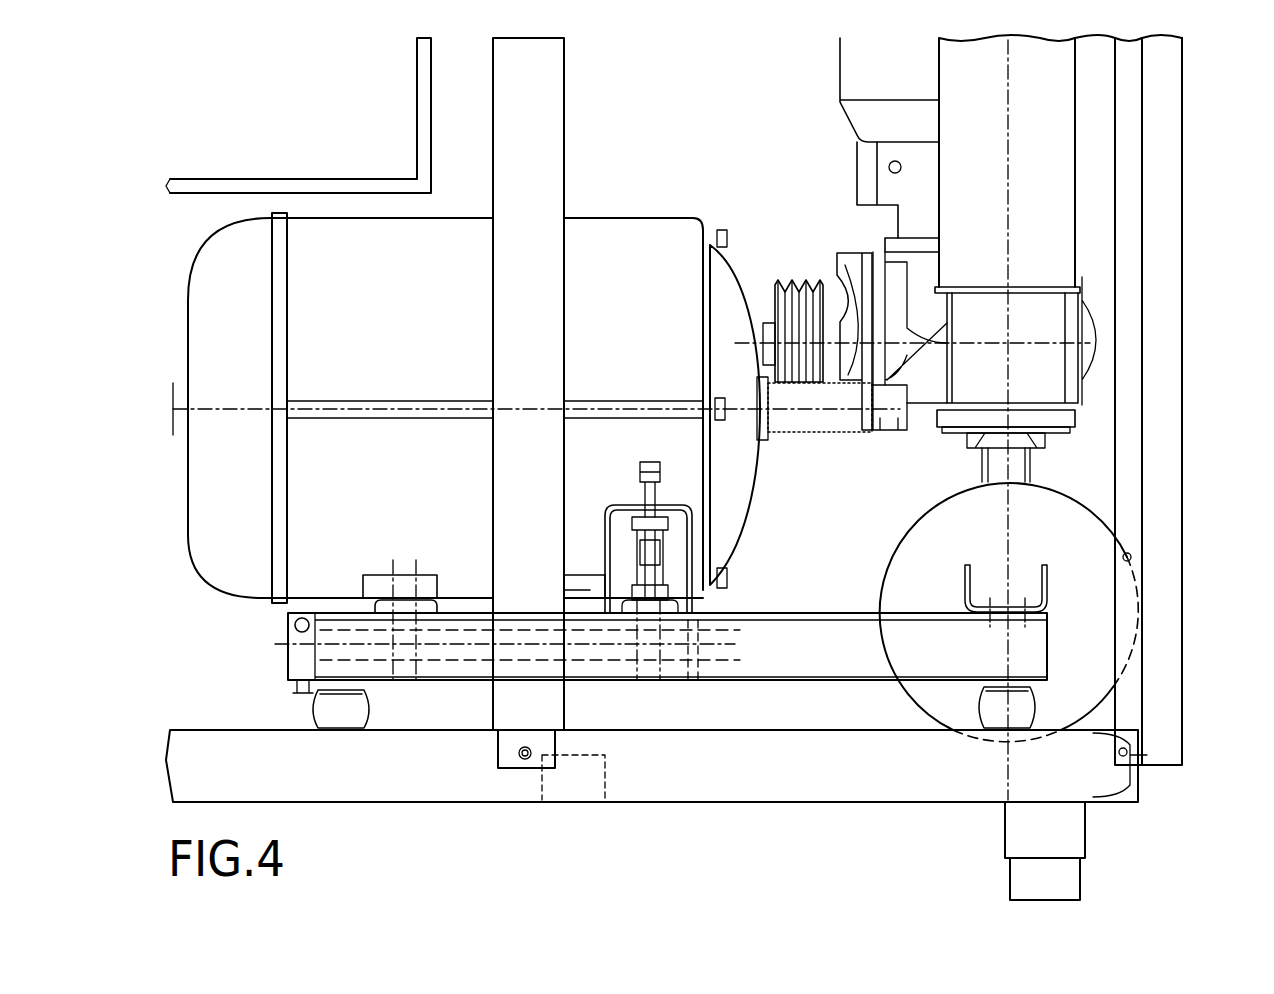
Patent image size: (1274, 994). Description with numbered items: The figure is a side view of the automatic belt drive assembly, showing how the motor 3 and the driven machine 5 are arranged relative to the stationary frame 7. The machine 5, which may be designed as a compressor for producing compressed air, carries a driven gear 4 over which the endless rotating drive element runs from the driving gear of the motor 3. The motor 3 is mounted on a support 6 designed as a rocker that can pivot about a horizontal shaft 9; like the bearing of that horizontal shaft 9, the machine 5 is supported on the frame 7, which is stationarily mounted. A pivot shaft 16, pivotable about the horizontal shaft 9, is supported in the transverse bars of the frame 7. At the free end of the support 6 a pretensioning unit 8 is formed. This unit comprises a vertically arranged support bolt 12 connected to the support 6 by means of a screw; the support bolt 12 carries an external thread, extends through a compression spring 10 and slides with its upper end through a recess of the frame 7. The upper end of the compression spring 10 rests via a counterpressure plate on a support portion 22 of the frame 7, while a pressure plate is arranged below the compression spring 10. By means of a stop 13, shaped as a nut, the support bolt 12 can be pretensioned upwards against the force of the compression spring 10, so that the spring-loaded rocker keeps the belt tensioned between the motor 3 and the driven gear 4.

The motor 3 is at (628, 246).
The driven gear 4 is at (800, 280).
The machine 5 is at (1090, 320).
The support 6 is at (385, 608).
The frame 7 is at (835, 750).
The pretensioning unit 8 is at (668, 552).
The horizontal shaft 9 is at (452, 655).
The compression spring 10 is at (667, 532).
The support bolt 12 is at (650, 560).
The stop 13 is at (640, 462).
The pivot shaft 16 is at (690, 680).
The support portion 22 is at (615, 505).